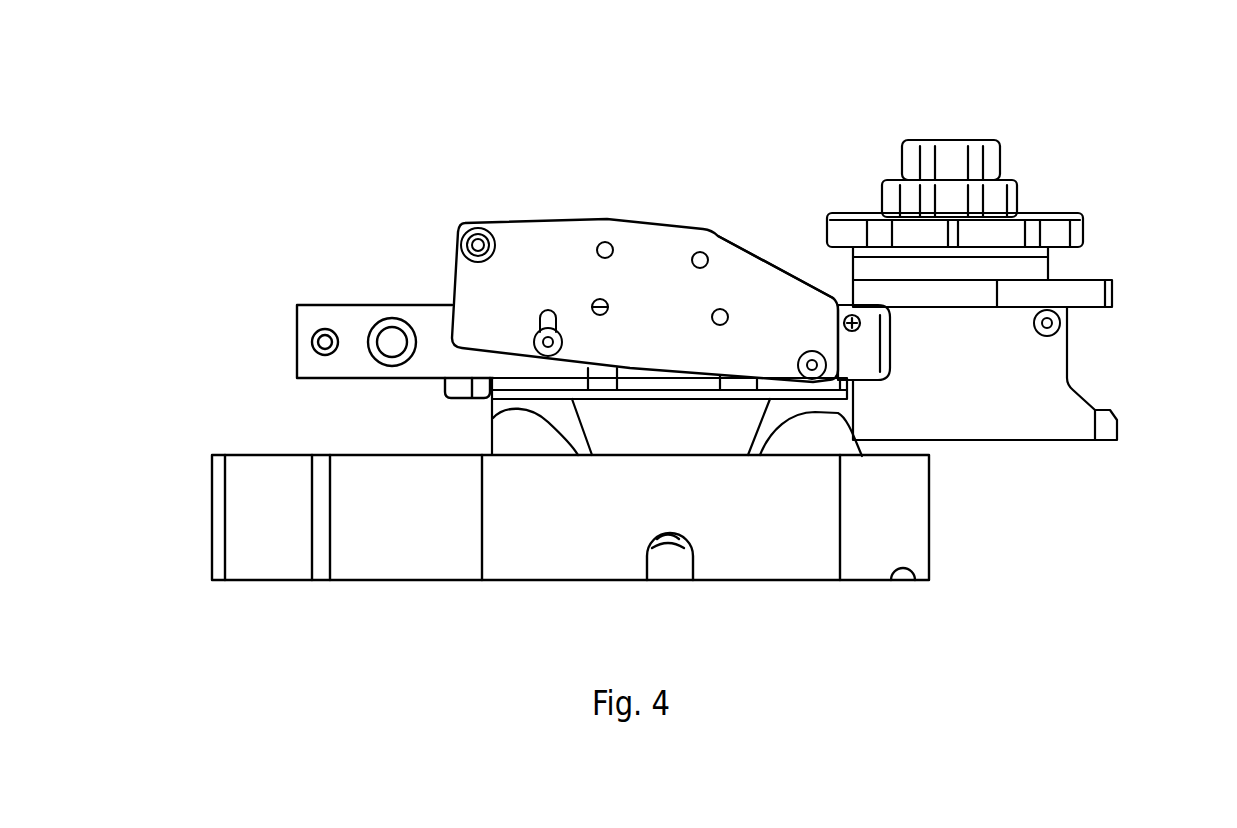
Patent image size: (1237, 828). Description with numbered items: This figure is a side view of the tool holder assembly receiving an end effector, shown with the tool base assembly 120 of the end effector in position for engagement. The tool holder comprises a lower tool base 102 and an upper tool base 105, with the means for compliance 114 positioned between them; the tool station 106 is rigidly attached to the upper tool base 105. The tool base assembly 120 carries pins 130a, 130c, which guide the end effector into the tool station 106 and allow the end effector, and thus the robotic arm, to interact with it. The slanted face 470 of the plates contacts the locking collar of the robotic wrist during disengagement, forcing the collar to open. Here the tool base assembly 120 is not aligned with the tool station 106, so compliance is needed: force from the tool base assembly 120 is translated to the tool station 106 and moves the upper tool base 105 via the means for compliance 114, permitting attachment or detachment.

The lower tool base 102 is at (832, 599).
The upper tool base 105 is at (612, 449).
The tool station 106 is at (529, 179).
The means for compliance 114 is at (527, 442).
The tool base assembly 120 is at (1040, 165).
The pin 130a is at (858, 330).
The pin 130c is at (1065, 328).
The slanted face 470 is at (782, 263).